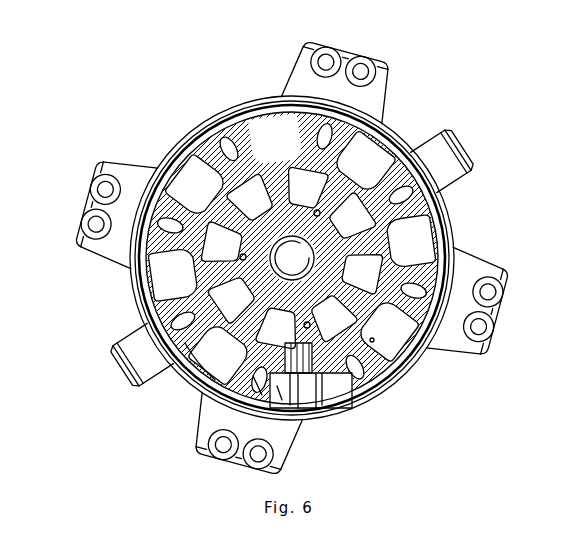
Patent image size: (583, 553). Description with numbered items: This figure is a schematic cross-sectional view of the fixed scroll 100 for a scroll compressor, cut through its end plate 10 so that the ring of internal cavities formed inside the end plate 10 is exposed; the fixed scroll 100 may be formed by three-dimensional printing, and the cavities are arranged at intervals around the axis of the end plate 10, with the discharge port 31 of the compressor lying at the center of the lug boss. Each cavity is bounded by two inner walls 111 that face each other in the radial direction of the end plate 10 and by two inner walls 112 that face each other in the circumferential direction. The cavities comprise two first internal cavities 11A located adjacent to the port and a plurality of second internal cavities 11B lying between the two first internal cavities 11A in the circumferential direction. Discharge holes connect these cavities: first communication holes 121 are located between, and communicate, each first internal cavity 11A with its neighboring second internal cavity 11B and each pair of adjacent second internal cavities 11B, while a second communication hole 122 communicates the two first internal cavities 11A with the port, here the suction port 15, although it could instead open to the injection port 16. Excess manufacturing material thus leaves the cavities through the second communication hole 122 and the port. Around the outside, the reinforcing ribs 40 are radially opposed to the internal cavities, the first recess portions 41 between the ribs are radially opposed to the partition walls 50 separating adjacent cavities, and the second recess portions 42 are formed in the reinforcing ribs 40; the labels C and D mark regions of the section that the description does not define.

The fixed scroll 100 is at (549, 67).
The end plate 10 is at (458, 217).
The discharge port 31 is at (203, 158).
The inner walls 112 is at (231, 140).
The inner walls 111 is at (277, 386).
The first internal cavities 11A is at (395, 345).
The second internal cavities 11B is at (217, 253).
The first communication holes 121 is at (351, 177).
The second communication hole 122 is at (345, 385).
The reinforcing ribs 40 is at (160, 350).
The first recess portions 41 is at (140, 383).
The second recess portions 42 is at (180, 323).
The partition walls 50 is at (200, 345).
The suction port 15 is at (322, 375).
The injection port 16 is at (306, 375).
The center axis C is at (372, 340).
The direction D is at (358, 225).